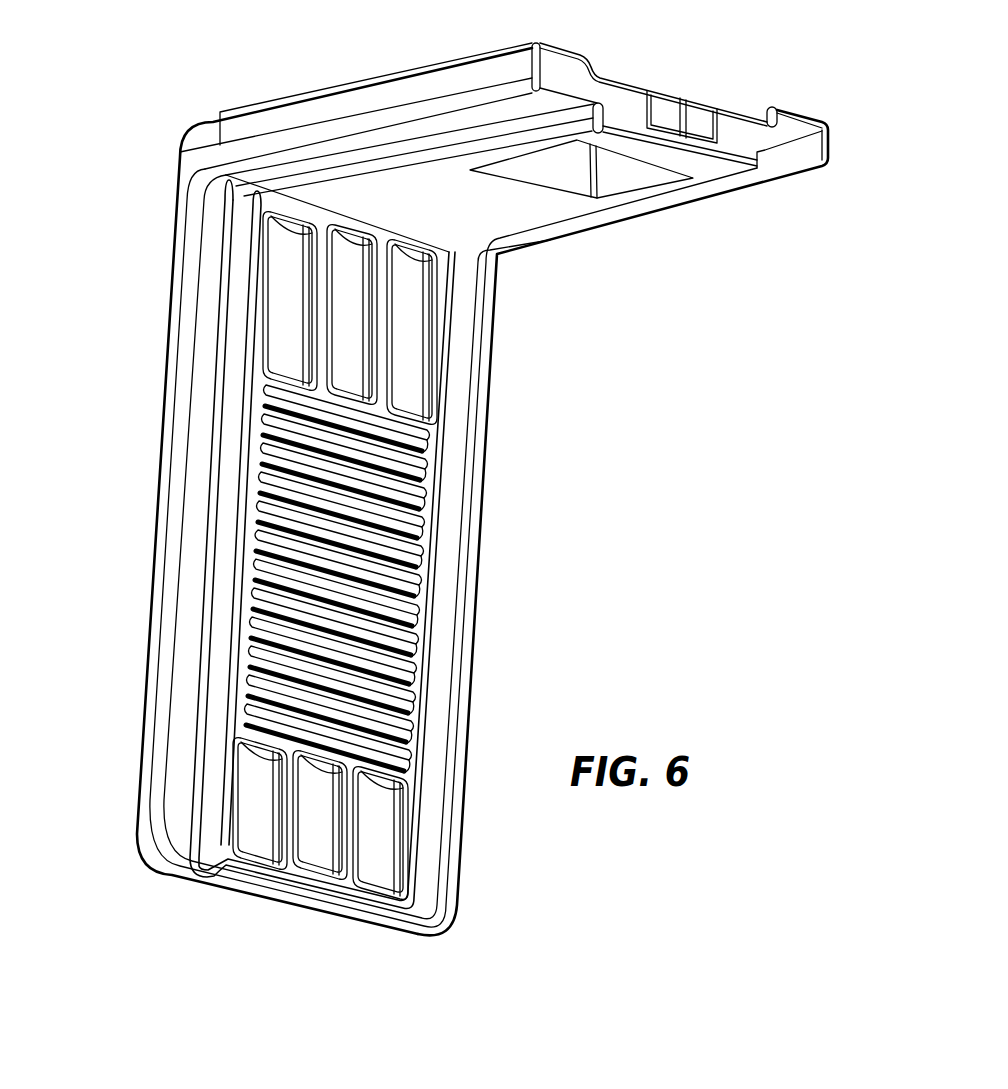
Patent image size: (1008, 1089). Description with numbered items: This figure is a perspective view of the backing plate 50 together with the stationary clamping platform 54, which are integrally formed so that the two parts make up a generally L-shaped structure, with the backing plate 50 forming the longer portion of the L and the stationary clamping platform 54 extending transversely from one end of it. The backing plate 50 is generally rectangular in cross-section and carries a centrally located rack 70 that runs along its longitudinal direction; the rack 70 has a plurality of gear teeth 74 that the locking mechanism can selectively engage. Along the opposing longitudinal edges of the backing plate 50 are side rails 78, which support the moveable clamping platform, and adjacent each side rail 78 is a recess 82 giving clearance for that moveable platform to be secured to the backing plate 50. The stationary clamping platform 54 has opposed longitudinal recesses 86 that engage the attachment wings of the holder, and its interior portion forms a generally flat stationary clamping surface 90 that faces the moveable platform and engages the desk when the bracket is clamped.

The backing plate 50 is at (135, 545).
The stationary clamping platform 54 is at (728, 62).
The rack 70 is at (401, 579).
The gear teeth 74 is at (420, 553).
The side rails 78 is at (178, 381).
The recess 82 is at (178, 784).
The longitudinal recesses 86 is at (476, 124).
The stationary clamping surface 90 is at (642, 235).